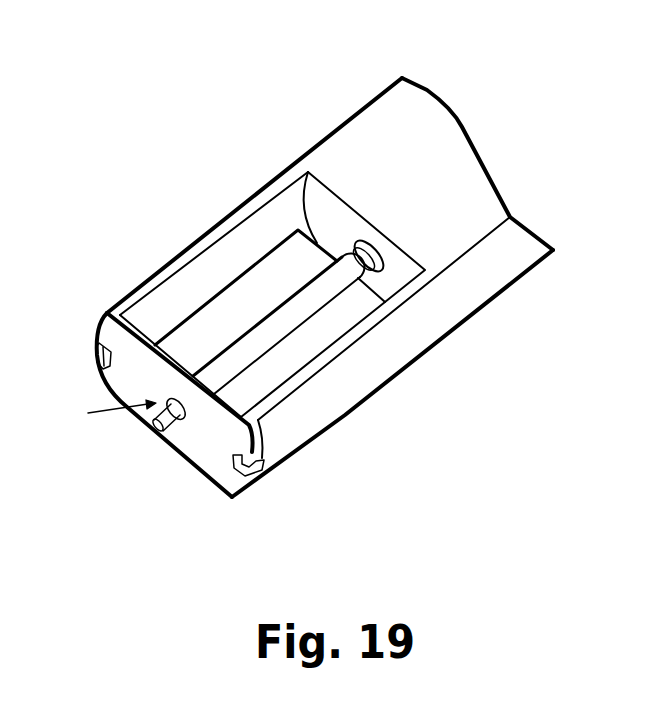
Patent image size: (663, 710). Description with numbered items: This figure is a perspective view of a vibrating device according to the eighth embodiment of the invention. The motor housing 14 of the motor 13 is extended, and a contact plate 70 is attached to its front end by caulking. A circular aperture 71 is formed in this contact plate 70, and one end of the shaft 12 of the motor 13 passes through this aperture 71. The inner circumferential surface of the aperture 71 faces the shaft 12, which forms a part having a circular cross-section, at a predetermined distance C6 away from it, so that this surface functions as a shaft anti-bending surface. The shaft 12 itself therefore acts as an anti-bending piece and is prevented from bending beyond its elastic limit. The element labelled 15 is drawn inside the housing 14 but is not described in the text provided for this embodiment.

The motor 13 is at (323, 91).
The motor housing 14 is at (318, 147).
The roller 15 is at (270, 262).
The contact plate 70 is at (234, 500).
The circular aperture 71 is at (178, 418).
The shaft 12 is at (155, 428).
The predetermined distance C6 is at (99, 417).